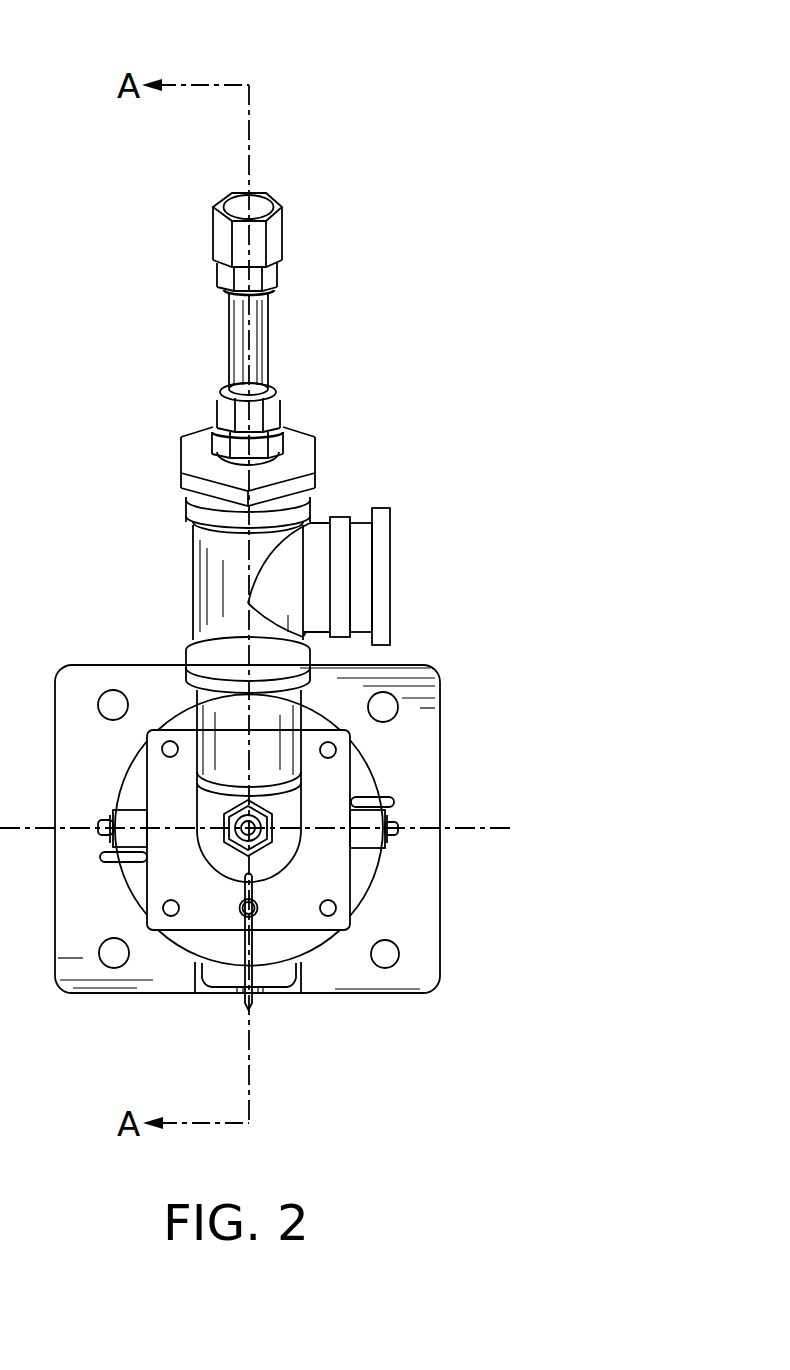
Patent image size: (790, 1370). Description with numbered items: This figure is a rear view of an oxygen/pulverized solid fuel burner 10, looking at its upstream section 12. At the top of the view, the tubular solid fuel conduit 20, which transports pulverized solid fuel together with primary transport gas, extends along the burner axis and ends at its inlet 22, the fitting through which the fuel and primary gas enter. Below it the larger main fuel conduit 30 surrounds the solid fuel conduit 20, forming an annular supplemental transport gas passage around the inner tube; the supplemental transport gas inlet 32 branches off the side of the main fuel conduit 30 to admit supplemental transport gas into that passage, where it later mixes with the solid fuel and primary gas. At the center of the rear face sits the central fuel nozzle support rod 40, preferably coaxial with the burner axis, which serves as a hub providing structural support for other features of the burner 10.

The oxygen/pulverized solid fuel burner 10 is at (436, 412).
The upstream section 12 is at (150, 405).
The tubular solid fuel conduit 20 is at (288, 320).
The inlet 22 is at (260, 207).
The main fuel conduit 30 is at (218, 592).
The supplemental transport gas inlet 32 is at (379, 568).
The central fuel nozzle support rod 40 is at (237, 838).